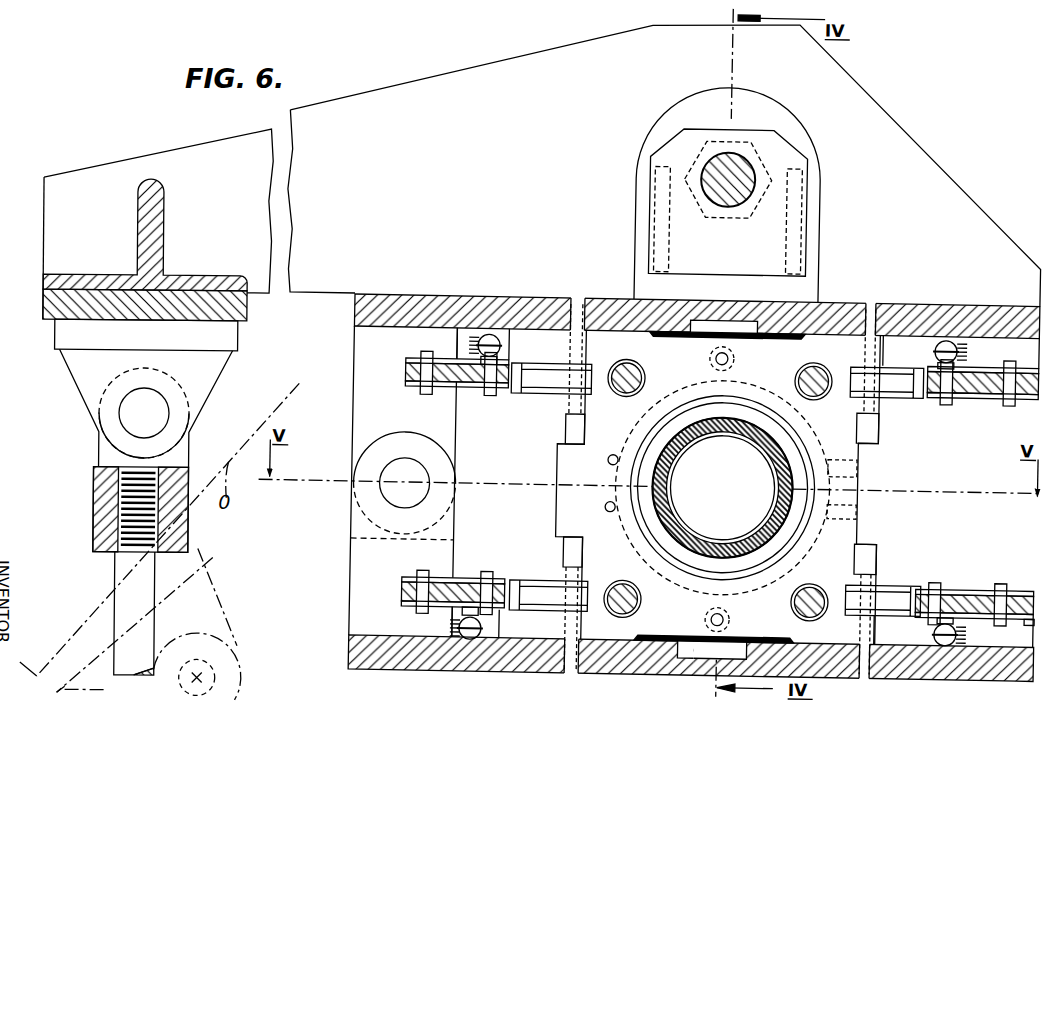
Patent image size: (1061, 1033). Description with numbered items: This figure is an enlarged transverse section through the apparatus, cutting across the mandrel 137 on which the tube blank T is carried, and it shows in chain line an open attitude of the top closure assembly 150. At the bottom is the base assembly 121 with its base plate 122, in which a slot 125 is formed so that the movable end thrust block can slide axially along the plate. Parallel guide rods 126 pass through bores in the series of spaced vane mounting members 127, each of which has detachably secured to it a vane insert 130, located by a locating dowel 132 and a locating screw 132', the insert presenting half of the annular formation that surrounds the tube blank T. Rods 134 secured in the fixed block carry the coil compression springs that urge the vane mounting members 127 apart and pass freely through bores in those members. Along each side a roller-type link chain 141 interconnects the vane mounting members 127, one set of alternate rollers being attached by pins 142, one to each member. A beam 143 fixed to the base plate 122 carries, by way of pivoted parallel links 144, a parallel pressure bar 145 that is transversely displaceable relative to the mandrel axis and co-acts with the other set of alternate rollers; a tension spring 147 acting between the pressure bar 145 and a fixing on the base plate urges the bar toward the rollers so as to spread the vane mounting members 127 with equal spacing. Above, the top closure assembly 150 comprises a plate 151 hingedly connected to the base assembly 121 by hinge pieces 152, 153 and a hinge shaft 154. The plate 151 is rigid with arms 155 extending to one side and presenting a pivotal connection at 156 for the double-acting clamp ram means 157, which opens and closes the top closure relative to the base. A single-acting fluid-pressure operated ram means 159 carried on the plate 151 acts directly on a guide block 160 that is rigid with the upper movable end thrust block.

The base assembly 121 is at (356, 640).
The base plate 122 is at (935, 652).
The slot 125 is at (704, 652).
The parallel guide rods 126 is at (628, 360).
The vane mounting members 127 is at (698, 337).
The vane insert 130 is at (760, 413).
The locating dowel 132 is at (576, 480).
The locating screw 132' is at (877, 489).
The rods 134 is at (727, 337).
The mandrel 137 is at (671, 500).
The roller-type link chain 141 is at (560, 380).
The pins 142 is at (883, 428).
The beam 143 is at (1018, 612).
The pivoted parallel links 144 is at (1017, 598).
The parallel pressure bar 145 is at (481, 372).
The tension spring 147 is at (958, 636).
The top closure assembly 150 is at (197, 190).
The plate 151 is at (357, 311).
The hinge piece 152 is at (360, 578).
The hinge piece 153 is at (365, 340).
The hinge shaft 154 is at (414, 488).
The arms 155 is at (336, 116).
The pivotal connection 156 is at (128, 413).
The clamp ram means 157 is at (116, 571).
The single-acting fluid-pressure operated ram means 159 is at (742, 150).
The guide block 160 is at (785, 143).
The tube blank T is at (713, 414).